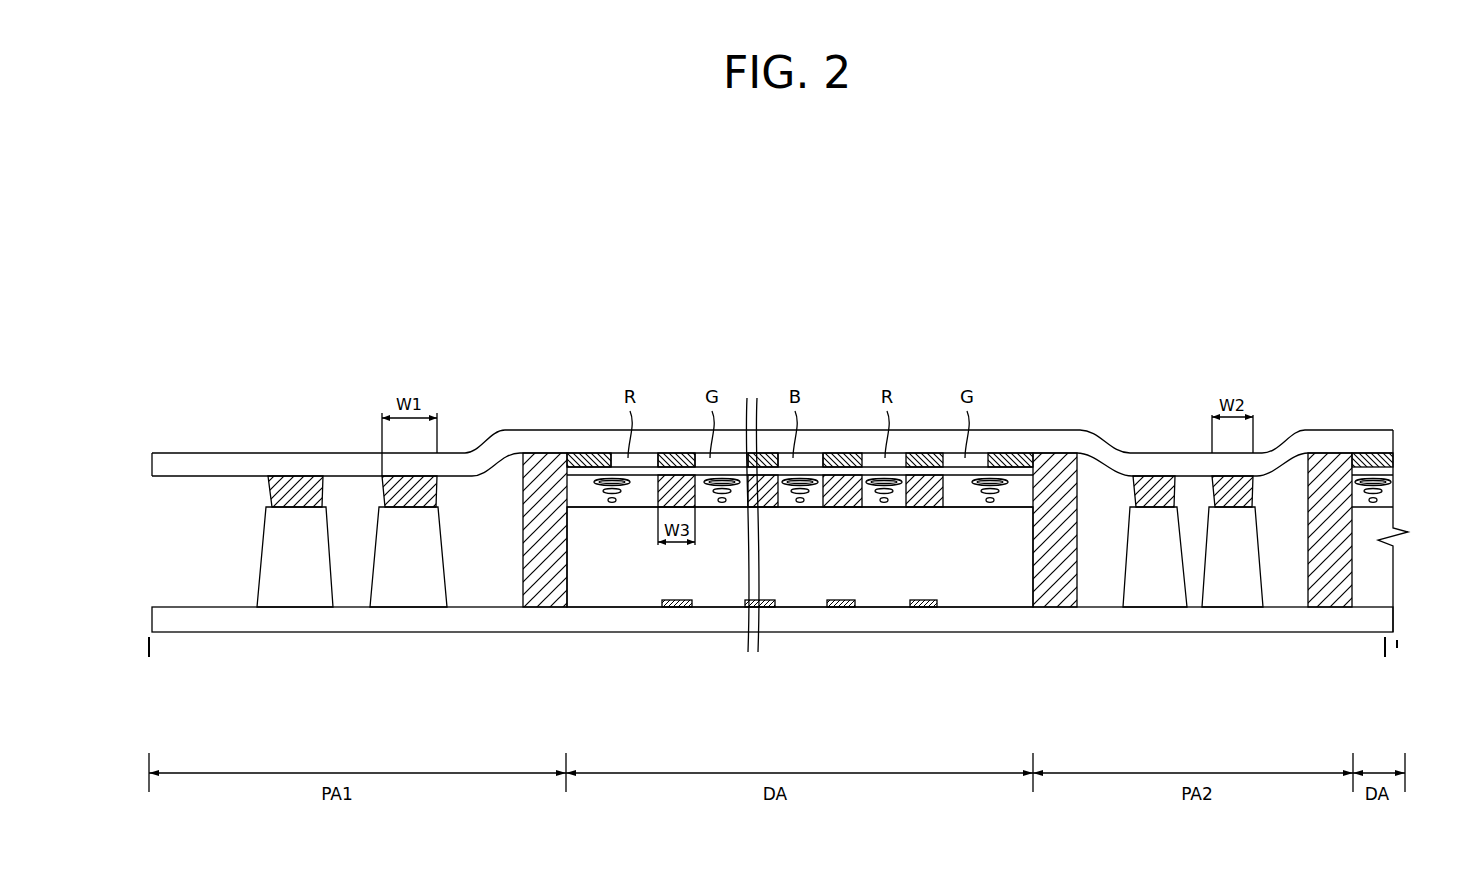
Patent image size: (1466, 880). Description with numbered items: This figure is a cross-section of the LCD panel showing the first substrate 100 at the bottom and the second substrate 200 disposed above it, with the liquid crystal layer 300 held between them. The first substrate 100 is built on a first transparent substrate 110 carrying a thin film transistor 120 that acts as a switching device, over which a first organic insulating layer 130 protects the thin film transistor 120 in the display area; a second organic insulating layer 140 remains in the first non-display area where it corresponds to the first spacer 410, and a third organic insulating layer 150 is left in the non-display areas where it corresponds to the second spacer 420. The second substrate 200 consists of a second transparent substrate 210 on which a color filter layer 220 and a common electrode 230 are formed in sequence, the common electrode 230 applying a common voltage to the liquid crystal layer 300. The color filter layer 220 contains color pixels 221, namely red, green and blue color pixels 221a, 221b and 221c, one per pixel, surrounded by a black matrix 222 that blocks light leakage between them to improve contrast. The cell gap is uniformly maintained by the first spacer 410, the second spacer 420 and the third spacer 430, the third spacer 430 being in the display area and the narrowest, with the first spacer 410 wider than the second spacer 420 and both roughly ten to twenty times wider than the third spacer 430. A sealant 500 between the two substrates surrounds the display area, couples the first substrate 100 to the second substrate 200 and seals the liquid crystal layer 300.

The first substrate 100 is at (772, 627).
The first transparent substrate 110 is at (582, 612).
The thin film transistor 120 is at (673, 607).
The first organic insulating layer 130 is at (567, 708).
The second organic insulating layer 140 is at (411, 593).
The third organic insulating layer 150 is at (1225, 572).
The second substrate 200 is at (780, 424).
The second transparent substrate 210 is at (586, 440).
The color filter layer 220 is at (800, 360).
The color pixels 221 is at (800, 381).
The red color pixel 221a is at (650, 458).
The green color pixel 221b is at (727, 458).
The blue color pixel 221c is at (818, 401).
The black matrix 222 is at (748, 295).
The common electrode 230 is at (602, 250).
The liquid crystal layer 300 is at (1388, 487).
The first spacer 410 is at (290, 486).
The second spacer 420 is at (1155, 487).
The third spacer 430 is at (803, 508).
The sealant 500 is at (1063, 588).